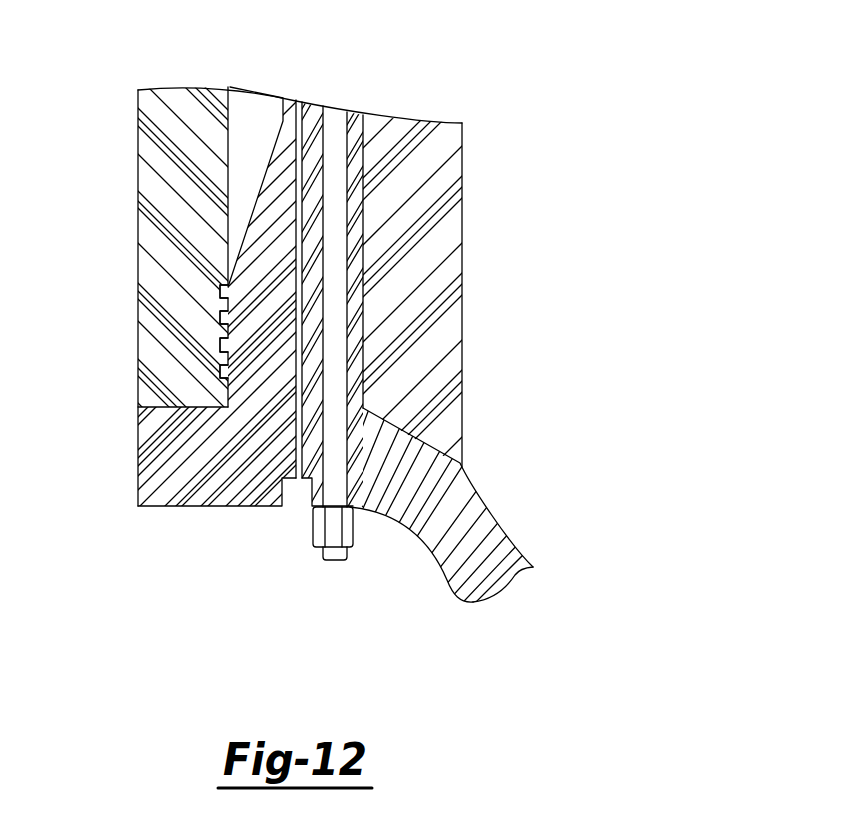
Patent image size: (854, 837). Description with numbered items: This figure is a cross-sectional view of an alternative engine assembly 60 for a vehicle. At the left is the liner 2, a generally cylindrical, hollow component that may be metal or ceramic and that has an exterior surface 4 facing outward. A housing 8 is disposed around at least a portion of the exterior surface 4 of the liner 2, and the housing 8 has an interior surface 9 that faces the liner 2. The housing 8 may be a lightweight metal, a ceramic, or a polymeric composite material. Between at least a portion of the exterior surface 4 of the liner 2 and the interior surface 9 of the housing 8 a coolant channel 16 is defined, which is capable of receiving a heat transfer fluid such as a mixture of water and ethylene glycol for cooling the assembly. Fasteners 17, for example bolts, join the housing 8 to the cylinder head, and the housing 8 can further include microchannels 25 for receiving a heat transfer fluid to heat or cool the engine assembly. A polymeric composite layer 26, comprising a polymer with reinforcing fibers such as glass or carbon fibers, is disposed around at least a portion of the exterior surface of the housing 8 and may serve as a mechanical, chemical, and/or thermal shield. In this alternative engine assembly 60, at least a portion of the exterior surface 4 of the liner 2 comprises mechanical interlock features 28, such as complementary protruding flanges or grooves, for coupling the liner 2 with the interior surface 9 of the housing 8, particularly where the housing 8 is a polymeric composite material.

The liner 2 is at (160, 148).
The exterior surface 4 is at (240, 272).
The housing 8 is at (312, 115).
The interior surface 9 is at (245, 275).
The coolant channel 16 is at (240, 100).
The fasteners 17 is at (313, 537).
The microchannels 25 is at (300, 251).
The polymeric composite layer 26 is at (437, 238).
The mechanical interlock features 28 is at (224, 286).
The alternative engine assembly 60 is at (621, 178).